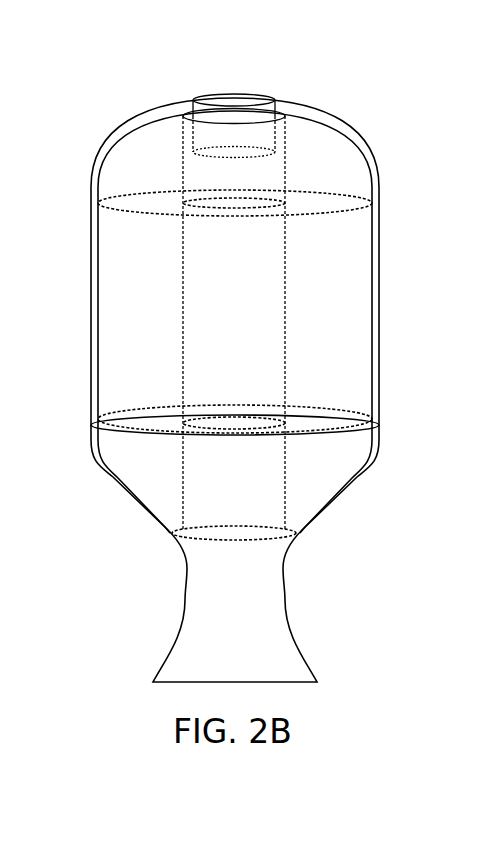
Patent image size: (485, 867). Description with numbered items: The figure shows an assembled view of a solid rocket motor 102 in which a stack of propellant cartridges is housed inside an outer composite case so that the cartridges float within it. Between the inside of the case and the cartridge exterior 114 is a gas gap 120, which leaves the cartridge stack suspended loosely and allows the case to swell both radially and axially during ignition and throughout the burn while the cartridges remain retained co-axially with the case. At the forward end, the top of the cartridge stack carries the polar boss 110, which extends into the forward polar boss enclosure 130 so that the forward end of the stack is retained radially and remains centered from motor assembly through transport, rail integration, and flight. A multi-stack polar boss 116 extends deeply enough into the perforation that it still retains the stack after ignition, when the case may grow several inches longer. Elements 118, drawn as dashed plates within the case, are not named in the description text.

The solid rocket motor 102 is at (266, 389).
The polar boss 110 is at (228, 98).
The cartridge exterior 114 is at (339, 114).
The multi-stack polar boss 116 is at (205, 343).
The plate 118 is at (124, 196).
The gas gap 120 is at (235, 269).
The forward polar boss enclosure 130 is at (255, 118).